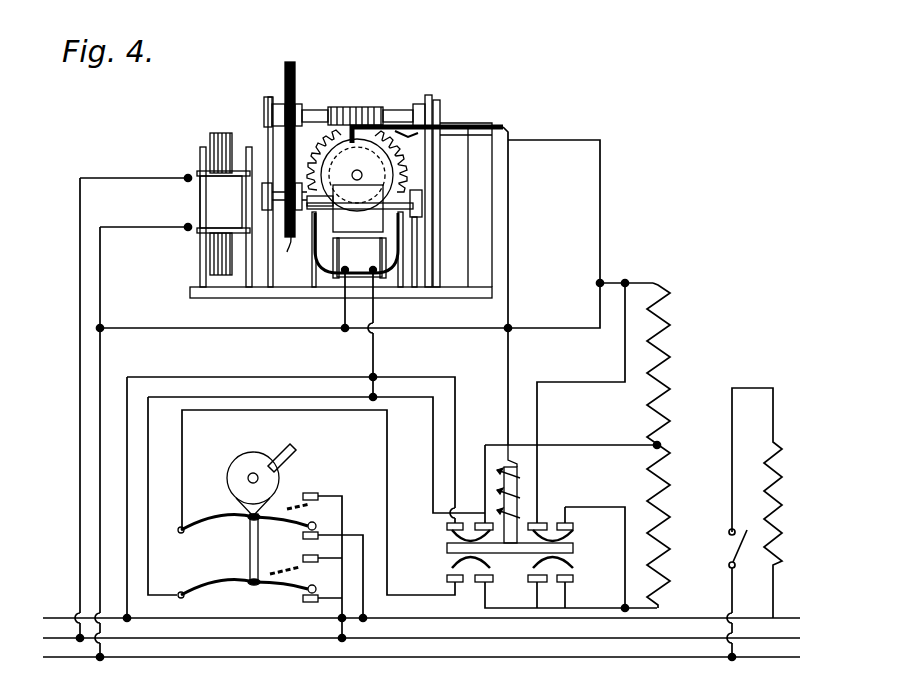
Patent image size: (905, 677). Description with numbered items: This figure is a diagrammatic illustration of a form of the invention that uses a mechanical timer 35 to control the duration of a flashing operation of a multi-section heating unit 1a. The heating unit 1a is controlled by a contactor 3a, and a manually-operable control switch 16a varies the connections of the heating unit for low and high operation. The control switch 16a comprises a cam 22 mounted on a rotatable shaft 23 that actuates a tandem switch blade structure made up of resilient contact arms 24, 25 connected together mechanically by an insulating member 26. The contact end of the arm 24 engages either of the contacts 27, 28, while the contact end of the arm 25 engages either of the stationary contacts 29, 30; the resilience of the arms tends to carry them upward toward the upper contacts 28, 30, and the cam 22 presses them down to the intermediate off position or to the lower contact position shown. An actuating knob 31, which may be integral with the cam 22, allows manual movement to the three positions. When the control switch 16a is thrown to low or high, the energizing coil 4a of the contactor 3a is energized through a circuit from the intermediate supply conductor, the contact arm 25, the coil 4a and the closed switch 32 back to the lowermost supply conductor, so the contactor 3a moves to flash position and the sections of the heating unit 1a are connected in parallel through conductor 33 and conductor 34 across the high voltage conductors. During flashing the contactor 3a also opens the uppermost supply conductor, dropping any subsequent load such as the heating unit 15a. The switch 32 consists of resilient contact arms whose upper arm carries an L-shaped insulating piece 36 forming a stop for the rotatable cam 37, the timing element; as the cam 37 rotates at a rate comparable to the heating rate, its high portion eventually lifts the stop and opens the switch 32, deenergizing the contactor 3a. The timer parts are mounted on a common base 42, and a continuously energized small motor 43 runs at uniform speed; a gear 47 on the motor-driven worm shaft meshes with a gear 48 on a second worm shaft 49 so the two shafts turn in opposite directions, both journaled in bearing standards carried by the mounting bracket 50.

The multi-section heating unit 1a is at (665, 368).
The contactor 3a is at (619, 488).
The energizing coil 4a is at (520, 484).
The heating unit 15a is at (824, 479).
The manually-operable control switch 16a is at (301, 514).
The cam 22 is at (238, 497).
The rotatable shaft 23 is at (247, 478).
The resilient contact arm 24 is at (213, 524).
The resilient contact arm 25 is at (202, 588).
The insulating member 26 is at (258, 543).
The contact 27 is at (327, 533).
The contact 28 is at (325, 498).
The stationary contact 29 is at (305, 598).
The stationary contact 30 is at (318, 567).
The actuating knob 31 is at (268, 462).
The switch 32 is at (409, 127).
The conductor 33 is at (202, 329).
The conductor 34 is at (573, 464).
The mechanical timer 35 is at (462, 243).
The L-shaped insulating piece 36 is at (374, 110).
The rotatable cam 37 is at (408, 182).
The base 42 is at (445, 298).
The motor 43 is at (228, 211).
The gear 47 is at (294, 254).
The gear 48 is at (285, 75).
The worm shaft 49 is at (346, 108).
The mounting bracket 50 is at (366, 265).